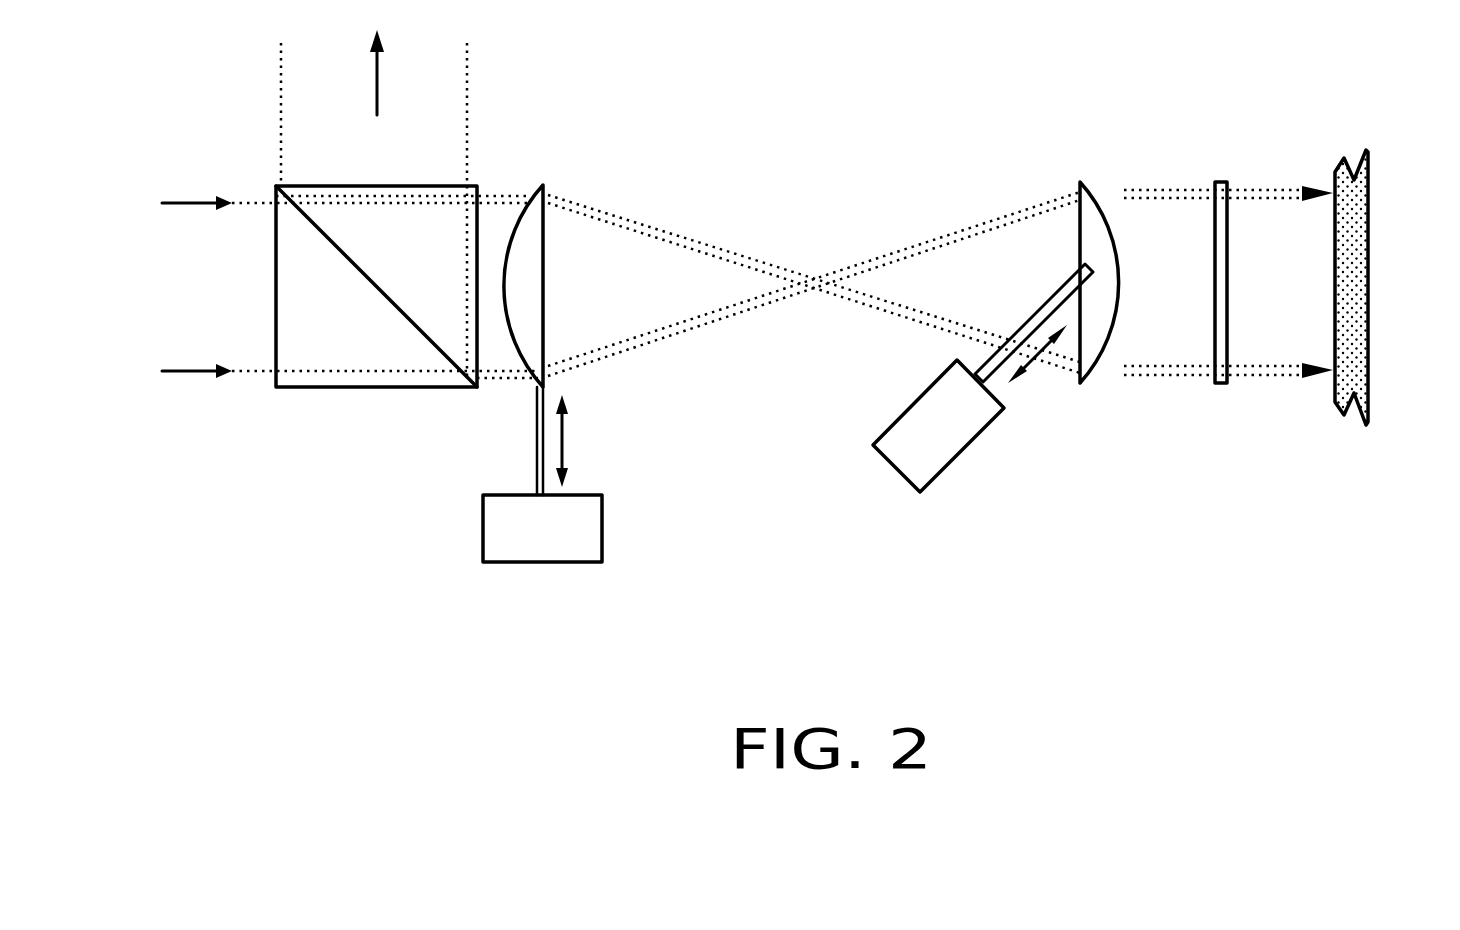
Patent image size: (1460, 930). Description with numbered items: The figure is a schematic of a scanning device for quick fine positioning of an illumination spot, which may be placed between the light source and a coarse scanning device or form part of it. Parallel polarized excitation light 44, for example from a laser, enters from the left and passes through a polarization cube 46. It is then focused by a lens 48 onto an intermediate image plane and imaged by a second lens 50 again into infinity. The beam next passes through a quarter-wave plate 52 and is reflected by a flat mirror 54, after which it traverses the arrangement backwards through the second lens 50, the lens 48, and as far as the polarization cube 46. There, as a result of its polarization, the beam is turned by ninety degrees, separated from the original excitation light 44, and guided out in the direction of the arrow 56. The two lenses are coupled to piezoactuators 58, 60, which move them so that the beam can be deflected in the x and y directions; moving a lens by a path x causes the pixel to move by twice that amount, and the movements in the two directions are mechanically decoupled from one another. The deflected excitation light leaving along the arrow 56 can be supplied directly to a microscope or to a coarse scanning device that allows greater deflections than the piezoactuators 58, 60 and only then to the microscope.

The parallel polarized excitation light 44 is at (217, 296).
The polarization cube 46 is at (365, 358).
The lens 48 is at (535, 232).
The second lens 50 is at (1088, 222).
The λ/4 plate 52 is at (1223, 200).
The flat mirror 54 is at (1360, 358).
The arrow 56 is at (374, 108).
The piezoactuator 58 is at (580, 552).
The piezoactuator 60 is at (955, 450).